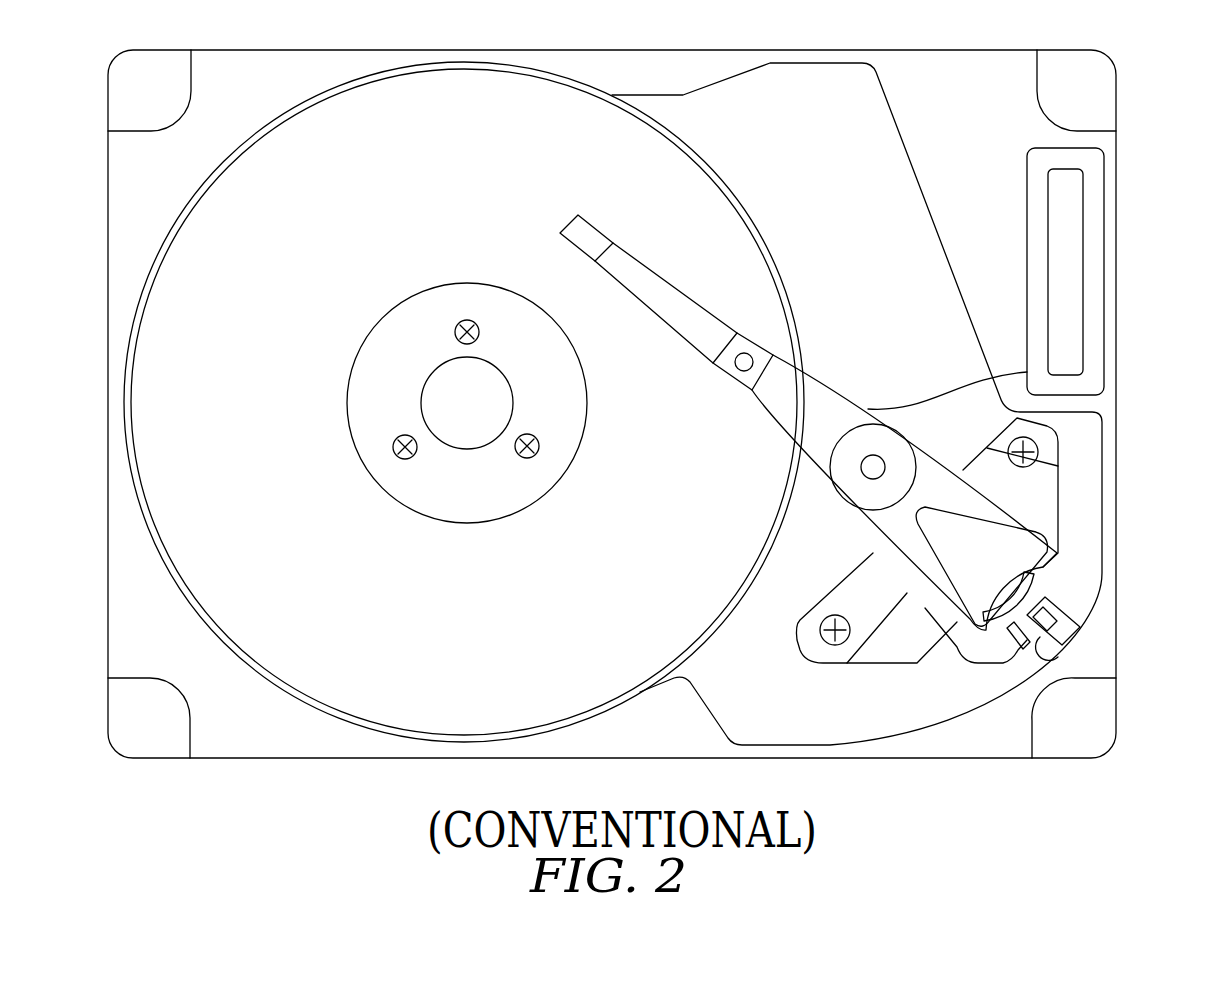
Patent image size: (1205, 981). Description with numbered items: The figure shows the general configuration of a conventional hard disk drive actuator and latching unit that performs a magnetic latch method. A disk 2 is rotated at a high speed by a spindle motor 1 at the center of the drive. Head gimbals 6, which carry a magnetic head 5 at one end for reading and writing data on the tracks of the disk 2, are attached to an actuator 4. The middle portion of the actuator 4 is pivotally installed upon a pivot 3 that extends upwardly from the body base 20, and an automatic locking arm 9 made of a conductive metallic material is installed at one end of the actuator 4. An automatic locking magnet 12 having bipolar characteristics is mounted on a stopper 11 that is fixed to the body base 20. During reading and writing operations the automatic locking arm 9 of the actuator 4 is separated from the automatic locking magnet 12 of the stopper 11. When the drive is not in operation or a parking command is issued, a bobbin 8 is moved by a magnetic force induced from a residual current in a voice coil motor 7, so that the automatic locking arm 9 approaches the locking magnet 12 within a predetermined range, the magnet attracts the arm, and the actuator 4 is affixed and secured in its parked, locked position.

The spindle motor 1 is at (478, 418).
The disk 2 is at (742, 224).
The pivot 3 is at (873, 467).
The actuator 4 is at (833, 398).
The magnetic head 5 is at (596, 234).
The head gimbals 6 is at (684, 304).
The voice coil motor 7 is at (890, 655).
The bobbin 8 is at (977, 657).
The automatic locking arm 9 is at (1022, 648).
The stopper 11 is at (1058, 618).
The automatic locking magnet 12 is at (1053, 658).
The body base 20 is at (1114, 455).